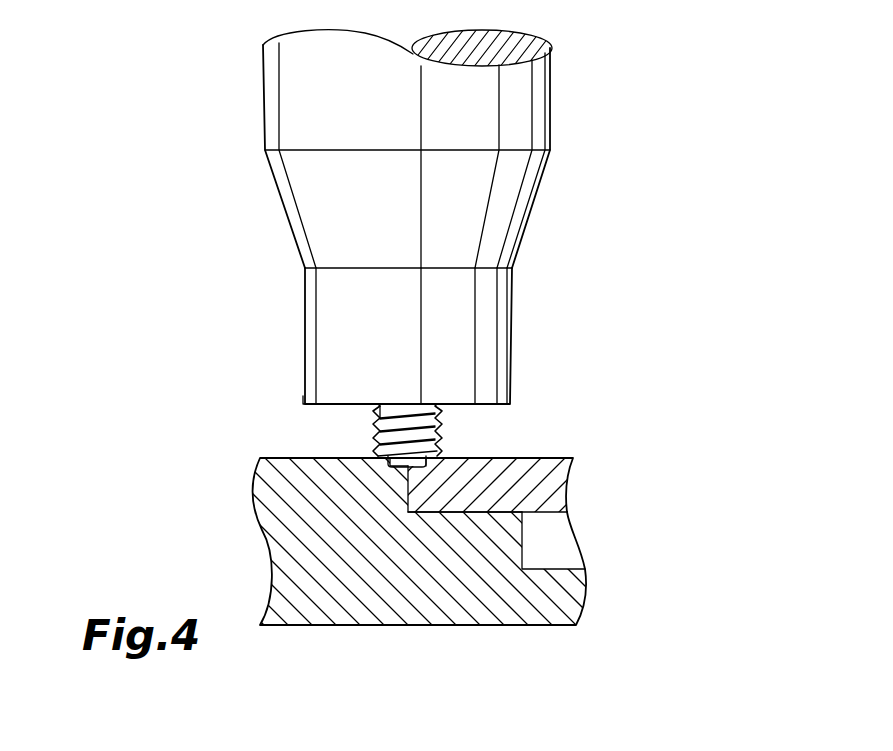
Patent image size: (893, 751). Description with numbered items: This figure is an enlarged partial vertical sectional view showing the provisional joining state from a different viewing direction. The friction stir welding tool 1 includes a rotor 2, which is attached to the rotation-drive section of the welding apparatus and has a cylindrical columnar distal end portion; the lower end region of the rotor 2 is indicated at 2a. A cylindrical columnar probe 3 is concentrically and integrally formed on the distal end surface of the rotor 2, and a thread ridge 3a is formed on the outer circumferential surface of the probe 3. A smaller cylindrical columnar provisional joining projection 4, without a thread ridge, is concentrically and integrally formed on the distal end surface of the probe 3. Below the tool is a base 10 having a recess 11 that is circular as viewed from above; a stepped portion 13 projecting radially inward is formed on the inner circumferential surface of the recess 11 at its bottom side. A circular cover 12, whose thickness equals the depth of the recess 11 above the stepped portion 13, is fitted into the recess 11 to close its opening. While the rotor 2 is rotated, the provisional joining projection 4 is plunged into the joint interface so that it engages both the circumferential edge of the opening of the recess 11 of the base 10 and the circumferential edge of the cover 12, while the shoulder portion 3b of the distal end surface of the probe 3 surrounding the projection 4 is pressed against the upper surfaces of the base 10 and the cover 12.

The friction stir welding tool 1 is at (598, 132).
The rotor 2 is at (480, 345).
The shank end face 2a is at (310, 404).
The probe 3 is at (445, 435).
The thread ridge 3a is at (387, 416).
The shoulder portion 3b is at (378, 467).
The provisional joining projection 4 is at (387, 472).
The base 10 is at (247, 573).
The recess 11 is at (584, 566).
The cover 12 is at (568, 457).
The stepped portion 13 is at (441, 513).